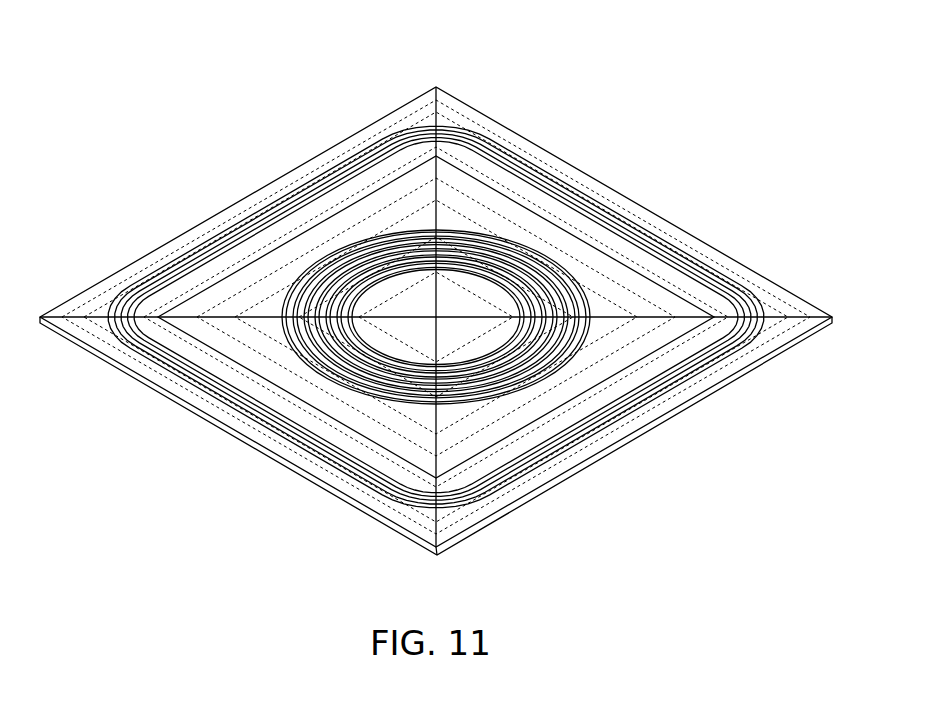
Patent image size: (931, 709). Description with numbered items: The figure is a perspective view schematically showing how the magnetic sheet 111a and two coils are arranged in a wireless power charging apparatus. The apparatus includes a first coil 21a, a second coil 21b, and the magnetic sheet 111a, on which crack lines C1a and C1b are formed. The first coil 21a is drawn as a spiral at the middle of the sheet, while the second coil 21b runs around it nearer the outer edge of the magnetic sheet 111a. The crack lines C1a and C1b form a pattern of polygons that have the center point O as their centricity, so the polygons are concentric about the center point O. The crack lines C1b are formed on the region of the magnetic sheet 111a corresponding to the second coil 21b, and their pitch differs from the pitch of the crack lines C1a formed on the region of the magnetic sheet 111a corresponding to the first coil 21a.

The magnetic sheet 111a is at (506, 124).
The first coil 21a is at (362, 231).
The second coil 21b is at (257, 213).
The center point O is at (440, 313).
The crack lines C1a is at (604, 294).
The crack lines C1b is at (790, 292).